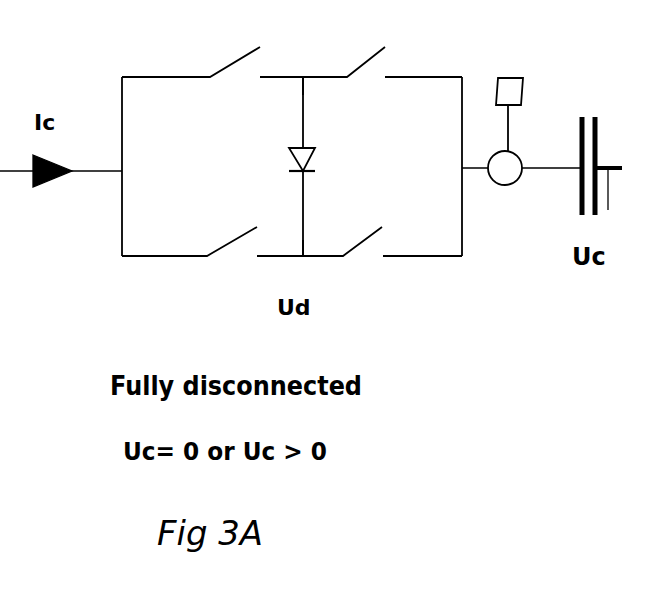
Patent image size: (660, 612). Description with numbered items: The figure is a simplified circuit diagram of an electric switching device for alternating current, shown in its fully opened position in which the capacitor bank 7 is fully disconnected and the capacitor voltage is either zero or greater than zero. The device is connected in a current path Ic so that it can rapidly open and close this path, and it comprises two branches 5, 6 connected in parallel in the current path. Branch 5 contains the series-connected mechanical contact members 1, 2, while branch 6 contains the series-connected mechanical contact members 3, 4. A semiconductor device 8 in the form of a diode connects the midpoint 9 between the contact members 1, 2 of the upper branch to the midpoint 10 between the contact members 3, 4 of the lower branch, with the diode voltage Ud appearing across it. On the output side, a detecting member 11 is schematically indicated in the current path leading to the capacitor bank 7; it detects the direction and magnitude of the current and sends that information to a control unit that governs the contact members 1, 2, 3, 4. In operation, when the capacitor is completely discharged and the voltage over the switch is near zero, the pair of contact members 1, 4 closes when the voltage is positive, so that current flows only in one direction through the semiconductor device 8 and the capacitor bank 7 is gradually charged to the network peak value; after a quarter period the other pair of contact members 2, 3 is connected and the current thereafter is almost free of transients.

The mechanical contact member 1 is at (212, 87).
The mechanical contact member 2 is at (382, 87).
The mechanical contact member 3 is at (212, 267).
The mechanical contact member 4 is at (382, 267).
The branch 5 is at (160, 77).
The branch 6 is at (158, 256).
The capacitor bank 7 is at (580, 140).
The semiconductor device 8 is at (316, 153).
The midpoint 9 is at (303, 77).
The midpoint 10 is at (303, 256).
The detecting member 11 is at (507, 185).